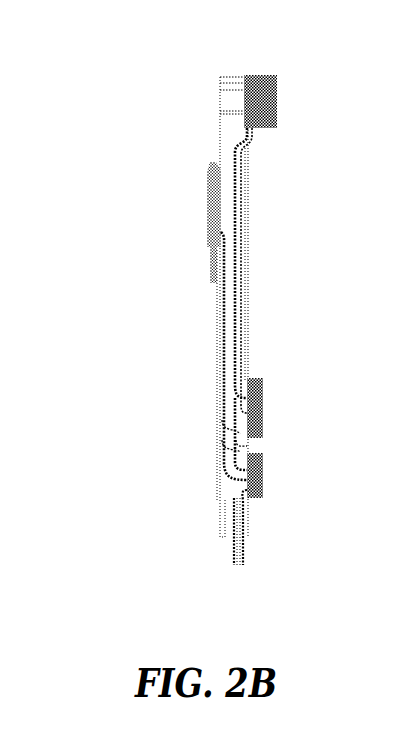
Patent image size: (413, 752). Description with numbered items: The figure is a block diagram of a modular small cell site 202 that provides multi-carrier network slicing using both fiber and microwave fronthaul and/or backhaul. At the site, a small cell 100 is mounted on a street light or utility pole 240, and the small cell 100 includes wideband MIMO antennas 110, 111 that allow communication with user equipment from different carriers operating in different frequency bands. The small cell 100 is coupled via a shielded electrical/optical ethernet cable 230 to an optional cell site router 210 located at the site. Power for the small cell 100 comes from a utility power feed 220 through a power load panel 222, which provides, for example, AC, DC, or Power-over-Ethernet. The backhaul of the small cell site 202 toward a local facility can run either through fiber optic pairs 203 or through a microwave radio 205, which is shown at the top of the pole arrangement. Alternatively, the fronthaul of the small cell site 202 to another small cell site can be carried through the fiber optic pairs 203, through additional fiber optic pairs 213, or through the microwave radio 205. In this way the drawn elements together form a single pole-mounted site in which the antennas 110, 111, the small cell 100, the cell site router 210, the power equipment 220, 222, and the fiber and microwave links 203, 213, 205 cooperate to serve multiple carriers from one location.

The small cell site 202 is at (97, 115).
The fiber optic pairs 203 is at (218, 508).
The microwave radio 205 is at (278, 84).
The street light or utility pole 240 is at (245, 212).
The small cell 100 is at (210, 203).
The wideband MIMO antenna 110 is at (212, 258).
The wideband MIMO antenna 111 is at (213, 265).
The shielded electrical/optical ethernet cable 230 is at (222, 315).
The cell site router 210 is at (264, 404).
The power load panel 222 is at (264, 477).
The utility power feed 220 is at (245, 557).
The fiber optic pairs 213 is at (232, 545).